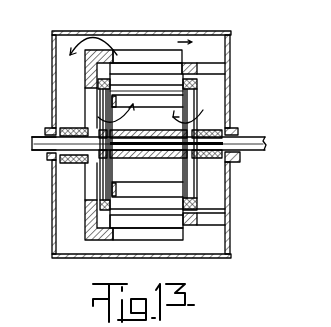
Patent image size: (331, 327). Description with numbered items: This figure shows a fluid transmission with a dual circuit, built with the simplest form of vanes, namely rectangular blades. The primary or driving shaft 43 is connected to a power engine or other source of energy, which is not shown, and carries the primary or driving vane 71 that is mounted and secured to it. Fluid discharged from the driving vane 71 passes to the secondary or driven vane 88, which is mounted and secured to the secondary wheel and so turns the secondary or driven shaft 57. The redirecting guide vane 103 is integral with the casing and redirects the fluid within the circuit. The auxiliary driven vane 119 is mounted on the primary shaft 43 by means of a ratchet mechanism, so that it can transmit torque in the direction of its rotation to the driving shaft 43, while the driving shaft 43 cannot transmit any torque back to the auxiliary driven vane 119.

The auxiliary driven vane 119 is at (157, 54).
The redirecting guide vane 103 is at (162, 70).
The secondary driven vane 88 is at (186, 84).
The primary driving vane 71 is at (138, 188).
The secondary driven shaft 57 is at (253, 139).
The primary driving shaft 43 is at (43, 146).